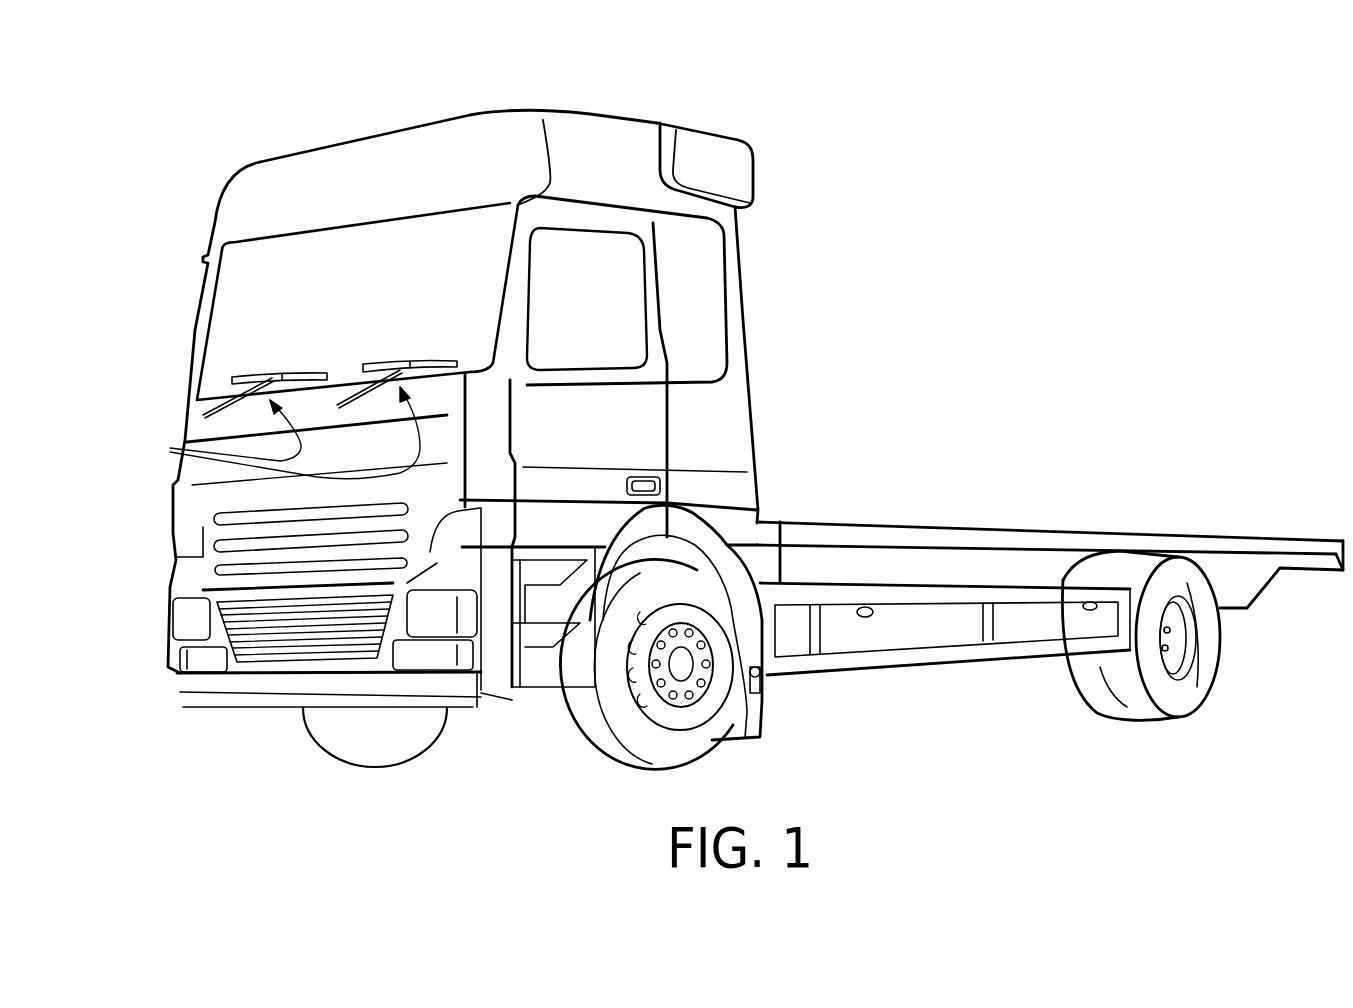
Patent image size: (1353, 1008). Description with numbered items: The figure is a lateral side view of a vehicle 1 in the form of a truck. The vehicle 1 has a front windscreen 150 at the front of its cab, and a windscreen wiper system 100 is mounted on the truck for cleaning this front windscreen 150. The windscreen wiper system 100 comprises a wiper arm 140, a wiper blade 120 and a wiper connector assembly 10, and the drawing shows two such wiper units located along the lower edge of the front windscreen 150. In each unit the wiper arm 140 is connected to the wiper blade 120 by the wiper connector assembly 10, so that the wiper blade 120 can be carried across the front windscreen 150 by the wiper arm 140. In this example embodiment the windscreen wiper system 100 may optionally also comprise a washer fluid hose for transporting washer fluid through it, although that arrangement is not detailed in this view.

The vehicle 1 is at (908, 182).
The wiper connector assembly 10 is at (170, 452).
The windscreen wiper system 100 is at (238, 433).
The wiper blade 120 is at (433, 363).
The wiper arm 140 is at (362, 372).
The front windscreen 150 is at (423, 268).